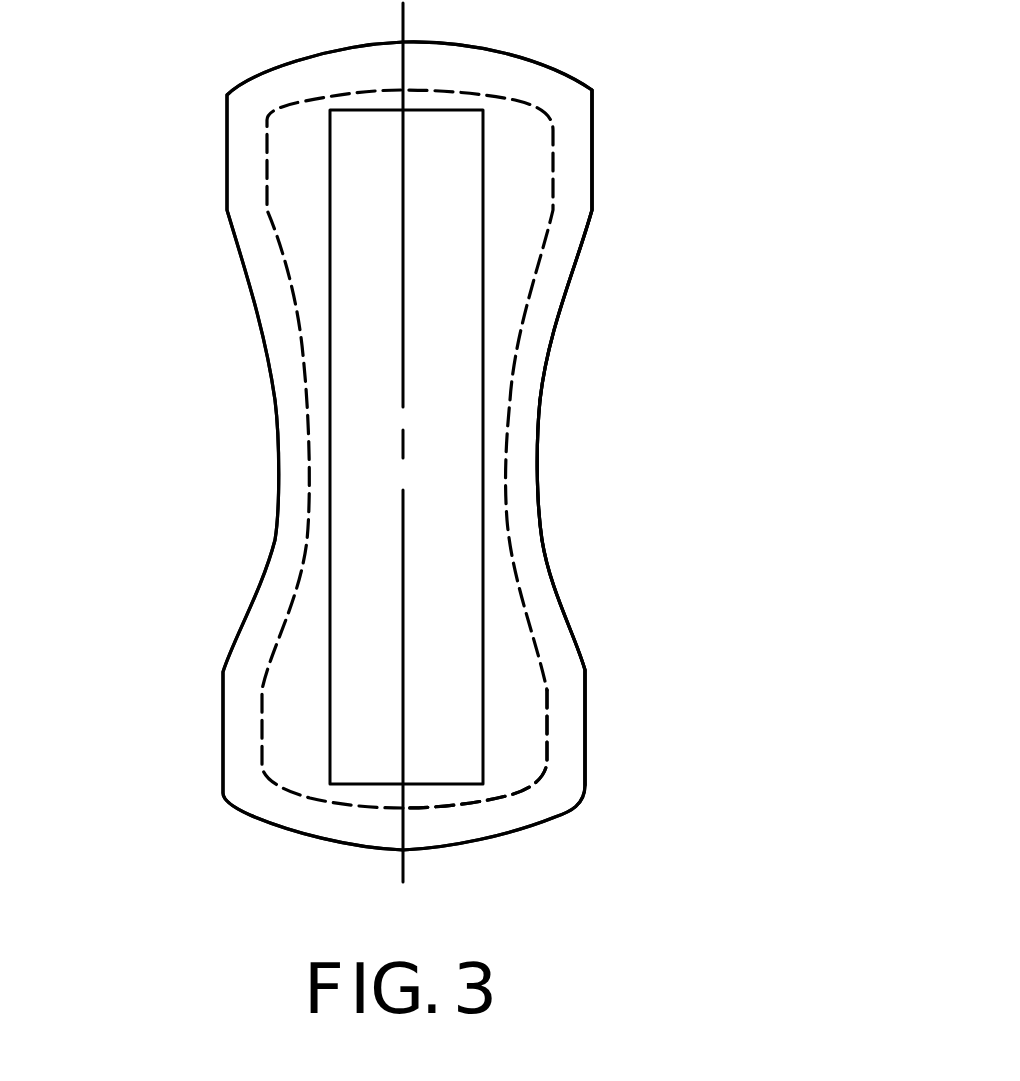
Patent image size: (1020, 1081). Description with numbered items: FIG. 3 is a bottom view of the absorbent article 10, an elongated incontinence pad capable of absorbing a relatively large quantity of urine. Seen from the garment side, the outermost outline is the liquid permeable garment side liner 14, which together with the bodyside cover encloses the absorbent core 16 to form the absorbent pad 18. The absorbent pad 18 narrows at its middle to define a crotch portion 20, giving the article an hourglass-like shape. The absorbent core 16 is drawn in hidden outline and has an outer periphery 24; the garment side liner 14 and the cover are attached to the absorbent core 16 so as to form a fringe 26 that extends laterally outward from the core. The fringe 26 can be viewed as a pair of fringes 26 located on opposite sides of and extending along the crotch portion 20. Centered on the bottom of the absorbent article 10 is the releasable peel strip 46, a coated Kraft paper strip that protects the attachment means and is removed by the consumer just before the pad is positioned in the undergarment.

The absorbent article 10 is at (683, 75).
The garment side liner 14 is at (560, 625).
The absorbent core 16 is at (292, 725).
The absorbent pad 18 is at (618, 191).
The crotch portion 20 is at (553, 343).
The outer periphery 24 is at (549, 737).
The fringe 26 is at (532, 509).
The peel strip 46 is at (483, 754).